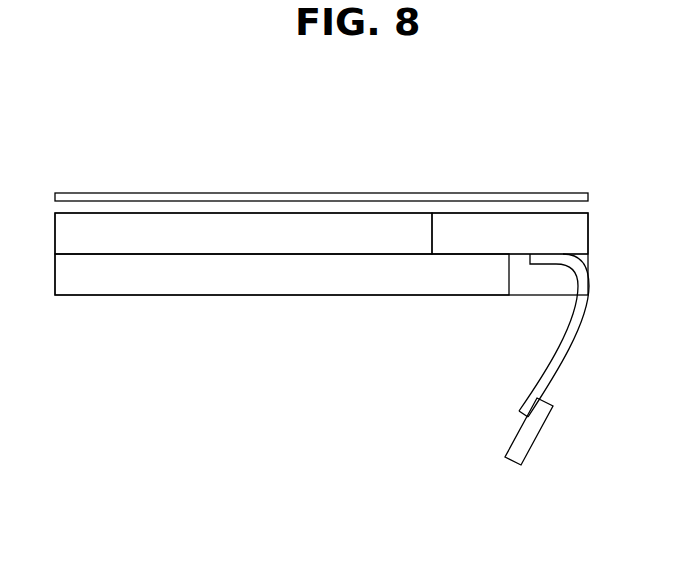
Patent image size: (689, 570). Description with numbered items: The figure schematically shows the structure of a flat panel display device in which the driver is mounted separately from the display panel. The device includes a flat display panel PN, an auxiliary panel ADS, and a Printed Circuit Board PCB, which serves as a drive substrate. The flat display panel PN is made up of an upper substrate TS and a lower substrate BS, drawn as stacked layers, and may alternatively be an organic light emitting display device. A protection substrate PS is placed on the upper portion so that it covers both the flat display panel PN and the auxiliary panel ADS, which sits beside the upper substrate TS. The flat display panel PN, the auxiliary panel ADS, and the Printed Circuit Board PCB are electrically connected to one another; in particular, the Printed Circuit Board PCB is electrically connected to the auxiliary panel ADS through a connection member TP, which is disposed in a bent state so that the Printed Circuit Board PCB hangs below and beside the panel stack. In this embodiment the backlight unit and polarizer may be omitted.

The protection substrate PS is at (82, 197).
The flat display panel PN is at (237, 148).
The upper substrate TS is at (175, 223).
The lower substrate BS is at (227, 263).
The auxiliary panel ADS is at (488, 225).
The connection member TP is at (577, 303).
The printed circuit board PCB is at (532, 435).